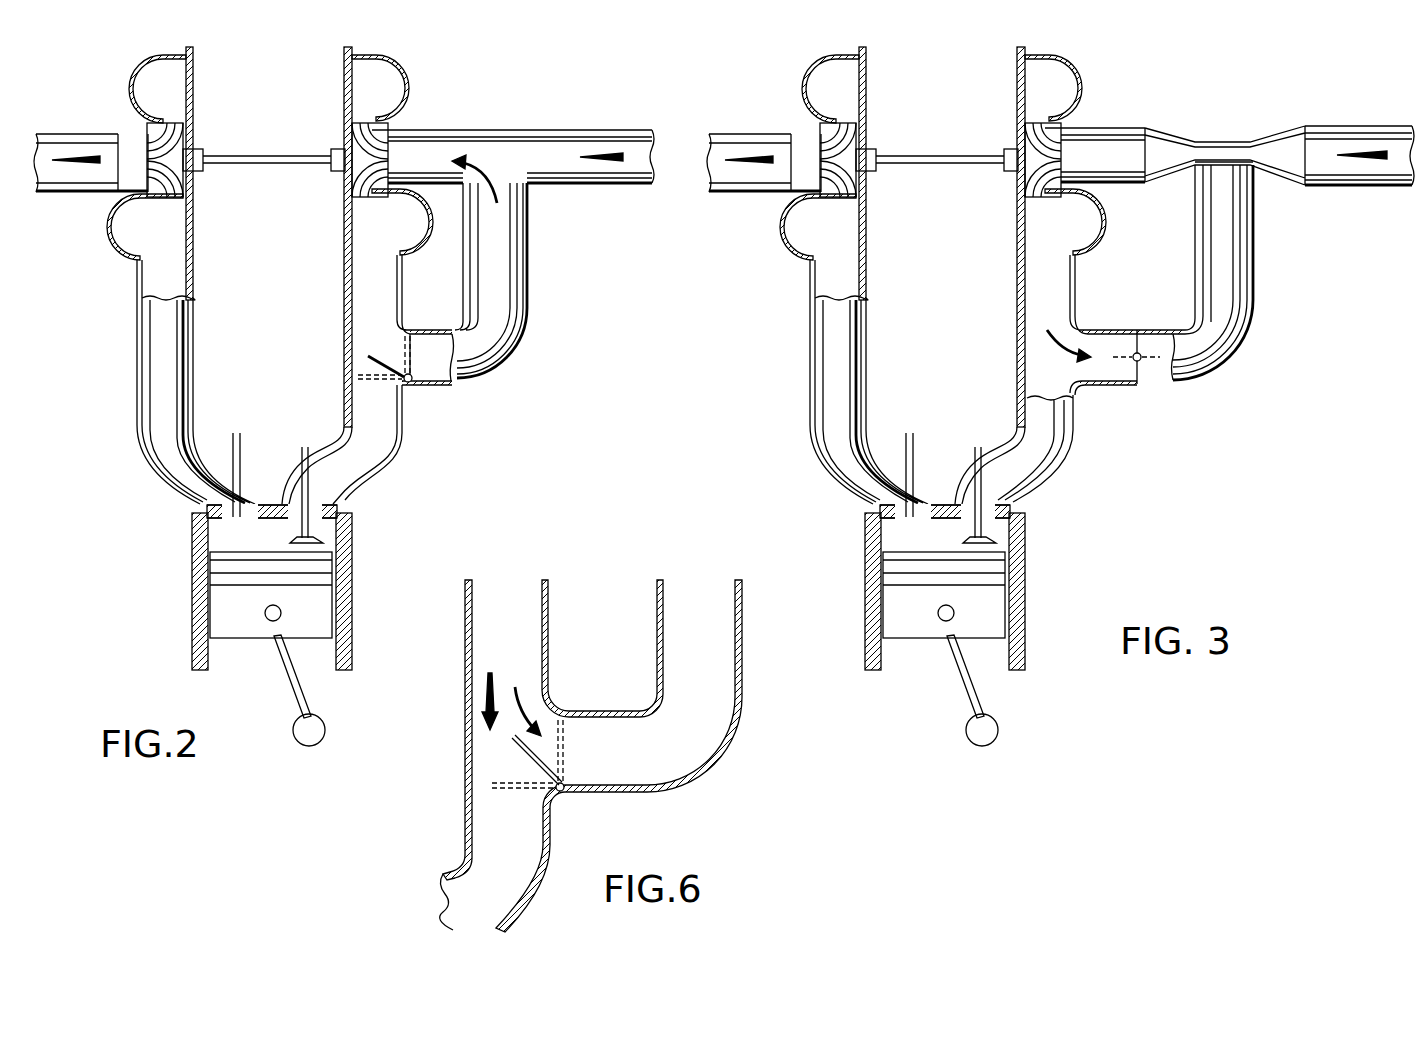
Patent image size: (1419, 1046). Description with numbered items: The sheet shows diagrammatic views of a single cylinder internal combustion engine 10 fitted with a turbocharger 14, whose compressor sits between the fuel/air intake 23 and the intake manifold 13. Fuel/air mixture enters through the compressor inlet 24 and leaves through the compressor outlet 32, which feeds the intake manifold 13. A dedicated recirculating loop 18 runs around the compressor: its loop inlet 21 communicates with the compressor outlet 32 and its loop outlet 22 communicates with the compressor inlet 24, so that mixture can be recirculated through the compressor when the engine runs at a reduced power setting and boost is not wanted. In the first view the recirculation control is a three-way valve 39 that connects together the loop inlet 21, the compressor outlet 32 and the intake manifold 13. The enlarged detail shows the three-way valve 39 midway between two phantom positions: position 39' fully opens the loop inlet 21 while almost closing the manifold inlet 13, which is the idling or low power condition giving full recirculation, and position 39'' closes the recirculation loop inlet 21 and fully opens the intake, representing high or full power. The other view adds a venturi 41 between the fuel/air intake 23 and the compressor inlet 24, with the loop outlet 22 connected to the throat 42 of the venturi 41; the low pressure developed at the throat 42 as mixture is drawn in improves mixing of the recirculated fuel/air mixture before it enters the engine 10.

In FIG. 2, the internal combustion engine 10 is at (175, 564).
In FIG. 3, the internal combustion engine 10 is at (1040, 571).
In FIG. 2, the intake manifold 13 is at (388, 440).
In FIG. 6, the intake manifold 13 is at (494, 875).
In FIG. 2, the turbocharger 14 is at (260, 155).
In FIG. 3, the turbocharger 14 is at (932, 153).
In FIG. 2, the recirculating loop 18 is at (493, 373).
In FIG. 6, the recirculating loop 18 is at (619, 773).
In FIG. 2, the loop inlet 21 is at (430, 373).
In FIG. 6, the loop inlet 21 is at (592, 777).
In FIG. 3, the loop outlet 22 is at (1210, 240).
In FIG. 3, the fuel/air intake 23 is at (1380, 137).
In FIG. 3, the compressor inlet 24 is at (1108, 135).
In FIG. 2, the compressor outlet 32 is at (350, 326).
In FIG. 6, the compressor outlet 32 is at (478, 730).
In FIG. 2, the three-way valve 39 is at (384, 351).
In FIG. 6, the three-way valve 39 is at (522, 760).
In FIG. 6, the valve position 39' is at (522, 805).
In FIG. 6, the valve position 39'' is at (590, 751).
In FIG. 3, the venturi 41 is at (1222, 126).
In FIG. 3, the throat 42 is at (1238, 150).